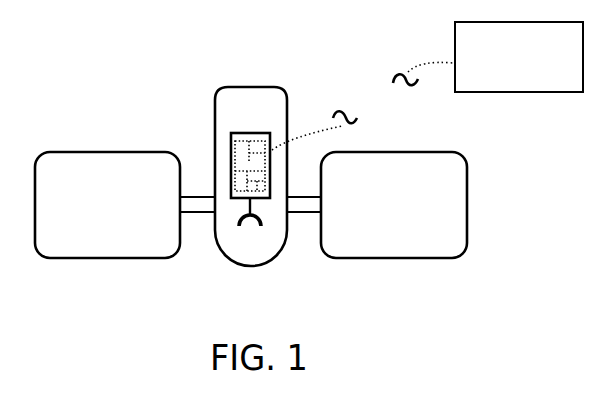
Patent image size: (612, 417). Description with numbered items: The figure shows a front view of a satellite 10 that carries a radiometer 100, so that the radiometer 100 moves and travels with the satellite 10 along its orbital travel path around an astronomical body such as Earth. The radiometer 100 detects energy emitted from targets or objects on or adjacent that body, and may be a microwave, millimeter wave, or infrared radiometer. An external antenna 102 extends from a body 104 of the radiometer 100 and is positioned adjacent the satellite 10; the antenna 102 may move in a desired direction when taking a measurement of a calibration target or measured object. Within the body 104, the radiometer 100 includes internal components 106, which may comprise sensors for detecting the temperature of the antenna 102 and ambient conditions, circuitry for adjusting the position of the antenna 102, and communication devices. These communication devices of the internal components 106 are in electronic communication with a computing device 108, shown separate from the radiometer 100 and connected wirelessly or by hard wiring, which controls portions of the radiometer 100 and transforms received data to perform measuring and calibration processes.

The satellite 10 is at (247, 88).
The radiometer 100 is at (239, 125).
The external antenna 102 is at (250, 218).
The body 104 is at (267, 133).
The internal components 106 is at (245, 153).
The computing device 108 is at (519, 57).